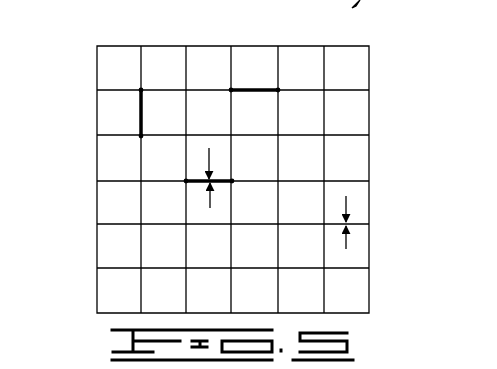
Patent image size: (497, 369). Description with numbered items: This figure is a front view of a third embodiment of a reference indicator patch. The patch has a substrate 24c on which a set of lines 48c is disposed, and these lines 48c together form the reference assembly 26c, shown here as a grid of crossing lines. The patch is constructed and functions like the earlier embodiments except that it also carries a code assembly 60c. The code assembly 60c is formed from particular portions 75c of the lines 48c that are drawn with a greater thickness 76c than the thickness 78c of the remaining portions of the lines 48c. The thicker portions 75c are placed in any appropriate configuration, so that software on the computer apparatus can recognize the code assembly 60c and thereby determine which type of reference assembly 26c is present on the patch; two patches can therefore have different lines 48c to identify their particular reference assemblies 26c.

The substrate 24c is at (372, 71).
The reference assembly 26c is at (183, 66).
The thicker portions of the lines 75c is at (139, 94).
The code assembly 60c is at (138, 110).
The lines 48c is at (138, 126).
The greater thickness 76c is at (212, 209).
The thickness of the remaining portions 78c is at (348, 250).